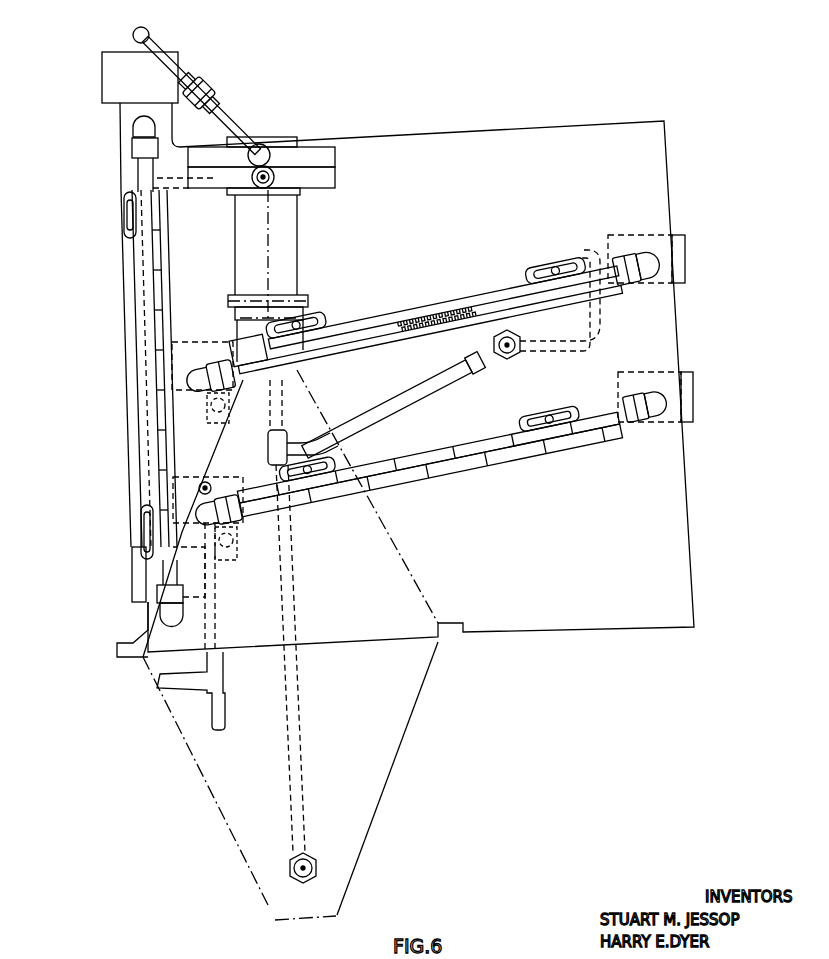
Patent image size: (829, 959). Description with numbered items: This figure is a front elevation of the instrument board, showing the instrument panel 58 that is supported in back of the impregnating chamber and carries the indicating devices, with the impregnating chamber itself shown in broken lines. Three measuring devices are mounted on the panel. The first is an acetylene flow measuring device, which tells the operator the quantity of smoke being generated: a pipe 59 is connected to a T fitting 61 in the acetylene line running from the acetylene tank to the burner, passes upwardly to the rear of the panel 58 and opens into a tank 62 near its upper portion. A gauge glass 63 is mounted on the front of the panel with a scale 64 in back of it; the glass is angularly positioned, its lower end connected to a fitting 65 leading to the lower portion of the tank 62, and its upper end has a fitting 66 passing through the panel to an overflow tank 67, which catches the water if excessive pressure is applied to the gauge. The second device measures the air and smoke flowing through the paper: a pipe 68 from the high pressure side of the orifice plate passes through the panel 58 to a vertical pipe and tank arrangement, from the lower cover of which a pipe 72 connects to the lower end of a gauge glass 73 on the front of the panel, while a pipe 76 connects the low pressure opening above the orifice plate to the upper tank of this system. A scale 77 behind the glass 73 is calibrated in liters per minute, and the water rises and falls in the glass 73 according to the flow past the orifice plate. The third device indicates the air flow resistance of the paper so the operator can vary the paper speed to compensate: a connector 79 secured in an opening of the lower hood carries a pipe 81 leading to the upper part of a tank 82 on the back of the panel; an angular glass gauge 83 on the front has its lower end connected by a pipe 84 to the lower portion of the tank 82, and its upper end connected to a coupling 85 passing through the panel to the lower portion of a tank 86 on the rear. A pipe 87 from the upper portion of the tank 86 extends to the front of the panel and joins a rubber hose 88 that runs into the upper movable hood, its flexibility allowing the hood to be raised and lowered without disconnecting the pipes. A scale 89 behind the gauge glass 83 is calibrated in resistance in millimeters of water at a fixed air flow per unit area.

The instrument panel 58 is at (470, 135).
The pipe 59 is at (213, 633).
The T fitting 61 is at (210, 683).
The tank 62 is at (183, 487).
The gauge glass 63 is at (431, 470).
The scale 64 is at (393, 473).
The fitting 65 is at (242, 515).
The fitting 66 is at (646, 421).
The overflow tank 67 is at (690, 410).
The pipe 68 is at (168, 182).
The pipe 72 is at (167, 622).
The gauge glass 73 is at (173, 393).
The pipe 76 is at (223, 118).
The scale 77 is at (150, 427).
The connector 79 is at (313, 870).
The pipe 81 is at (302, 823).
The tank 82 is at (183, 350).
The angular glass gauge 83 is at (425, 312).
The pipe 84 is at (187, 373).
The coupling 85 is at (640, 282).
The tank 86 is at (680, 252).
The pipe 87 is at (597, 317).
The rubber hose 88 is at (440, 385).
The scale 89 is at (342, 342).